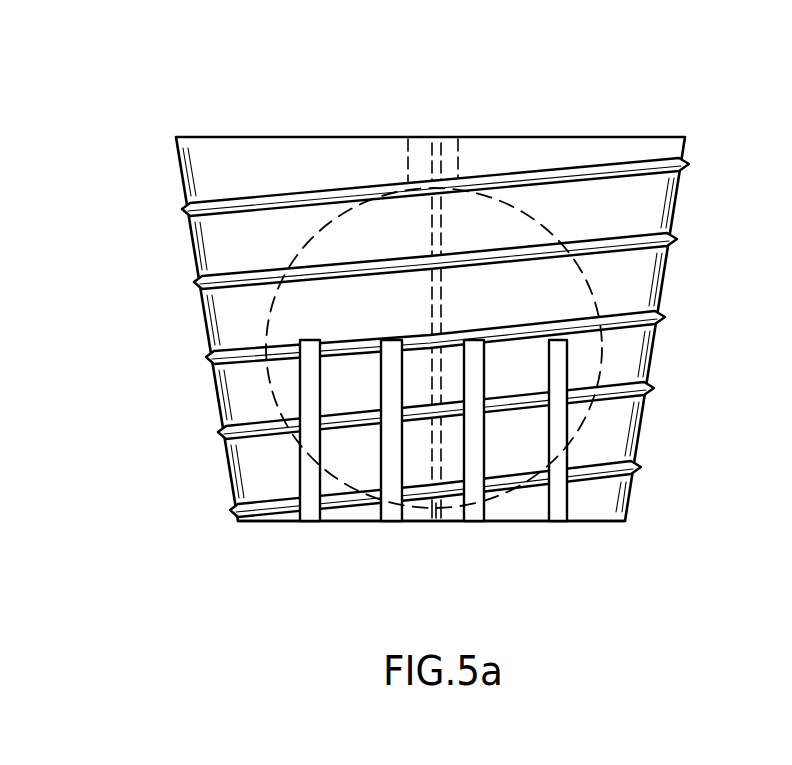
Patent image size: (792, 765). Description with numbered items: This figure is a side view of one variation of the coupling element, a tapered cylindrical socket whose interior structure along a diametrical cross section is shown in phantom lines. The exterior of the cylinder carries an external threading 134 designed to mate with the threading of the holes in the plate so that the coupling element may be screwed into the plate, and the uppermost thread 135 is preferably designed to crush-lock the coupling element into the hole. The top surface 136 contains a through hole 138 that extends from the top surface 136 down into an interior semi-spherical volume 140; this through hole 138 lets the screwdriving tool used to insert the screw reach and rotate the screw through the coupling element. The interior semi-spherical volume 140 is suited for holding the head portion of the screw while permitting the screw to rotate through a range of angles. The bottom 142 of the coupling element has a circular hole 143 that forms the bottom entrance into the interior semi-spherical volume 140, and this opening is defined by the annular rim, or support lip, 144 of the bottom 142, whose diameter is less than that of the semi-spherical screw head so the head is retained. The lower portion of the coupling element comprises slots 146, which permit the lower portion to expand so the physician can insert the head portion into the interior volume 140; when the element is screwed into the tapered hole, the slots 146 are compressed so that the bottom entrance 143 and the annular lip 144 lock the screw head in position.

The external threading 134 is at (654, 388).
The uppermost thread 135 is at (690, 160).
The top surface 136 is at (298, 137).
The through hole 138 is at (424, 145).
The interior semi-spherical volume 140 is at (458, 310).
The bottom 142 is at (578, 533).
The circular hole 143 is at (434, 522).
The annular rim 144 is at (365, 522).
The slots 146 is at (312, 447).